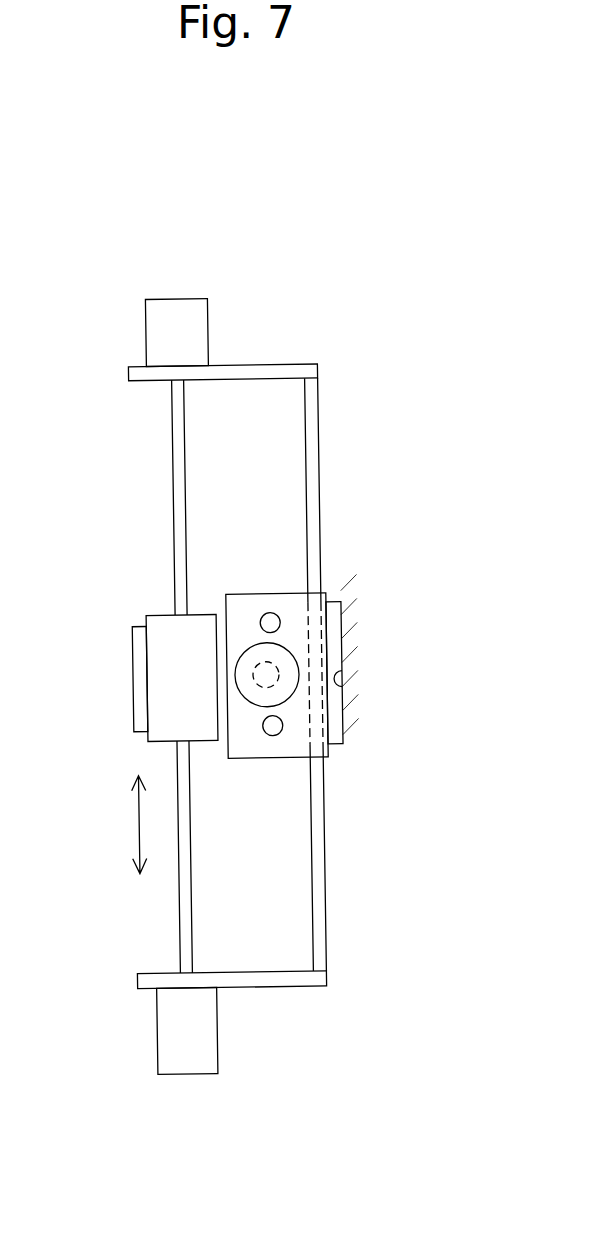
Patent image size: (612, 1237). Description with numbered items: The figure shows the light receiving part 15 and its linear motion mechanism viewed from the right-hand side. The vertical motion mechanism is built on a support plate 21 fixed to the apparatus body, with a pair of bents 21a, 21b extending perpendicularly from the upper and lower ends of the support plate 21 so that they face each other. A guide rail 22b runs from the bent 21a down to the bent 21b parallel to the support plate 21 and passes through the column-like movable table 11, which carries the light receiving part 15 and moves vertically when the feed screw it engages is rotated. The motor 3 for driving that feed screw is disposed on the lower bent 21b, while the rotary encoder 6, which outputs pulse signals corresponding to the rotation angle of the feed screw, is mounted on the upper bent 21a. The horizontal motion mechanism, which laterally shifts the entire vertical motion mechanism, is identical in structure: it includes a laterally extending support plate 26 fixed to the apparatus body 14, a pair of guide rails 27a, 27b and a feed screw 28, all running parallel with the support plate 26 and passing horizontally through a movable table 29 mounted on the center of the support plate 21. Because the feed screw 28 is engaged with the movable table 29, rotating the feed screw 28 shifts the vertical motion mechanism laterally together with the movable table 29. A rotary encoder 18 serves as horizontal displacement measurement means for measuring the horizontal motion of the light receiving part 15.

The motor 3 is at (152, 1033).
The rotary encoder 6 is at (151, 322).
The movable table 11 is at (163, 614).
The apparatus body 14 is at (342, 688).
The light receiving part 15 is at (133, 673).
The rotary encoder 18 is at (284, 645).
The support plate 21 is at (281, 678).
The bent 21a is at (275, 364).
The bent 21b is at (288, 988).
The guide rail 22b is at (177, 456).
The support plate 26 is at (342, 612).
The guide rail 27a is at (269, 614).
The guide rail 27b is at (264, 736).
The feed screw 28 is at (278, 677).
The movable table 29 is at (289, 758).